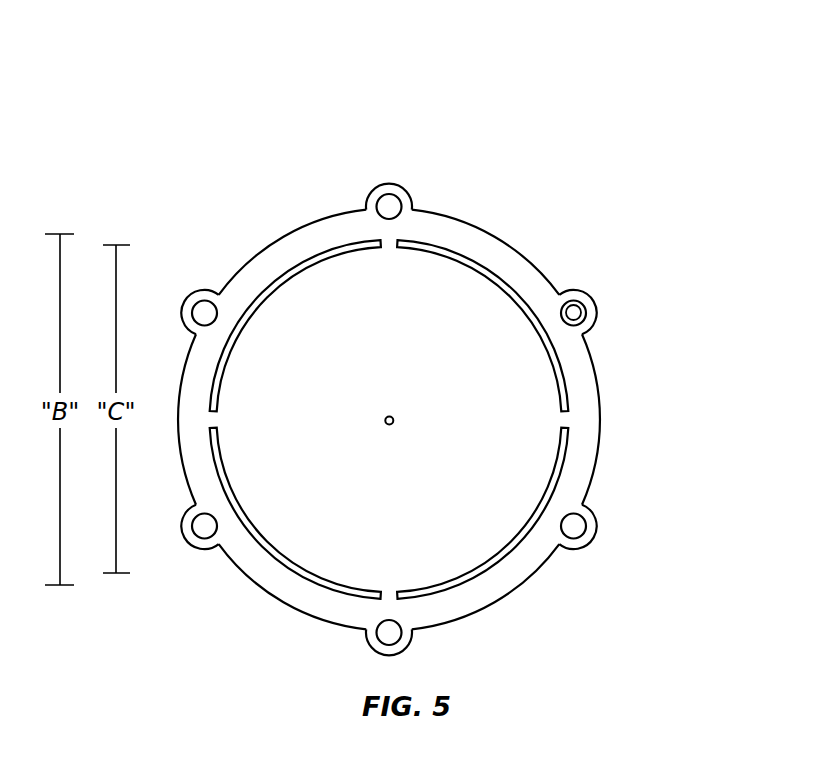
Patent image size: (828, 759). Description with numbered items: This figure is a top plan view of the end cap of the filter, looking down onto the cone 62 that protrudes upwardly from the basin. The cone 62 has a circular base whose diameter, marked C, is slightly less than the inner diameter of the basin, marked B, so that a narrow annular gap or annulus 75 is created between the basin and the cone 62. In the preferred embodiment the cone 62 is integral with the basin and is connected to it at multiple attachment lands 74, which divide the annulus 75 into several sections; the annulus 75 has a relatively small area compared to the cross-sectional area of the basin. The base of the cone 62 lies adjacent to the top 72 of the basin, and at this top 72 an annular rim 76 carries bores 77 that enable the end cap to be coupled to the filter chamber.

The cone 62 is at (508, 440).
The top of the basin 72 is at (490, 582).
The attachment lands 74 is at (563, 415).
The annulus 75 is at (565, 368).
The annular rim 76 is at (503, 260).
The bores 77 is at (574, 312).